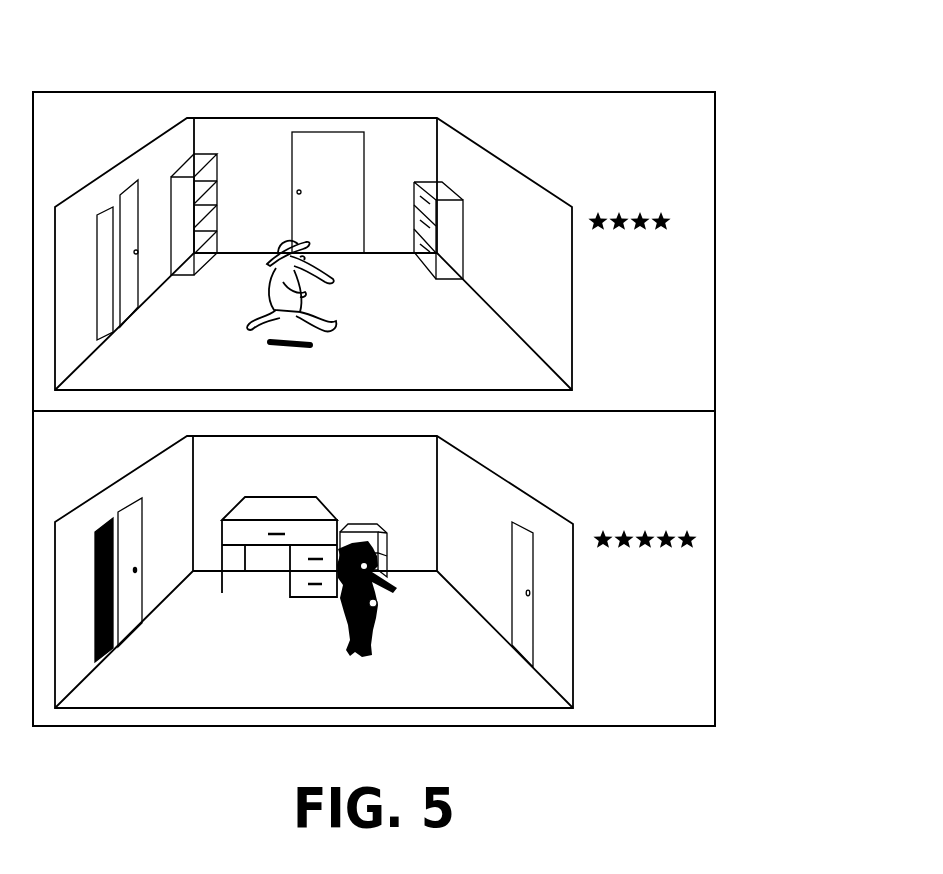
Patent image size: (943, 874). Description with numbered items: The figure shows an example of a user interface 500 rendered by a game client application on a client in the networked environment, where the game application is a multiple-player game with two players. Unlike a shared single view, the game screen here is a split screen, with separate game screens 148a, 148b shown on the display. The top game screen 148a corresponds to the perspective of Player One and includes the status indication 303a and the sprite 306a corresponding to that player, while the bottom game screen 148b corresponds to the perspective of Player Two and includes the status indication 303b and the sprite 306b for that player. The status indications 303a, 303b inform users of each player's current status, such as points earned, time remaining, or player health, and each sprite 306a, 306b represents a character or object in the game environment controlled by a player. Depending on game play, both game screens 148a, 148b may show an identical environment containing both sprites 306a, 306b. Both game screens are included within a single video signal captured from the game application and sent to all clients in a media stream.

The user interface 500 is at (756, 114).
The top game screen 148a is at (677, 342).
The bottom game screen 148b is at (658, 665).
The status indication 303a is at (677, 217).
The status indication 303b is at (702, 538).
The sprite 306a is at (284, 272).
The sprite 306b is at (356, 657).